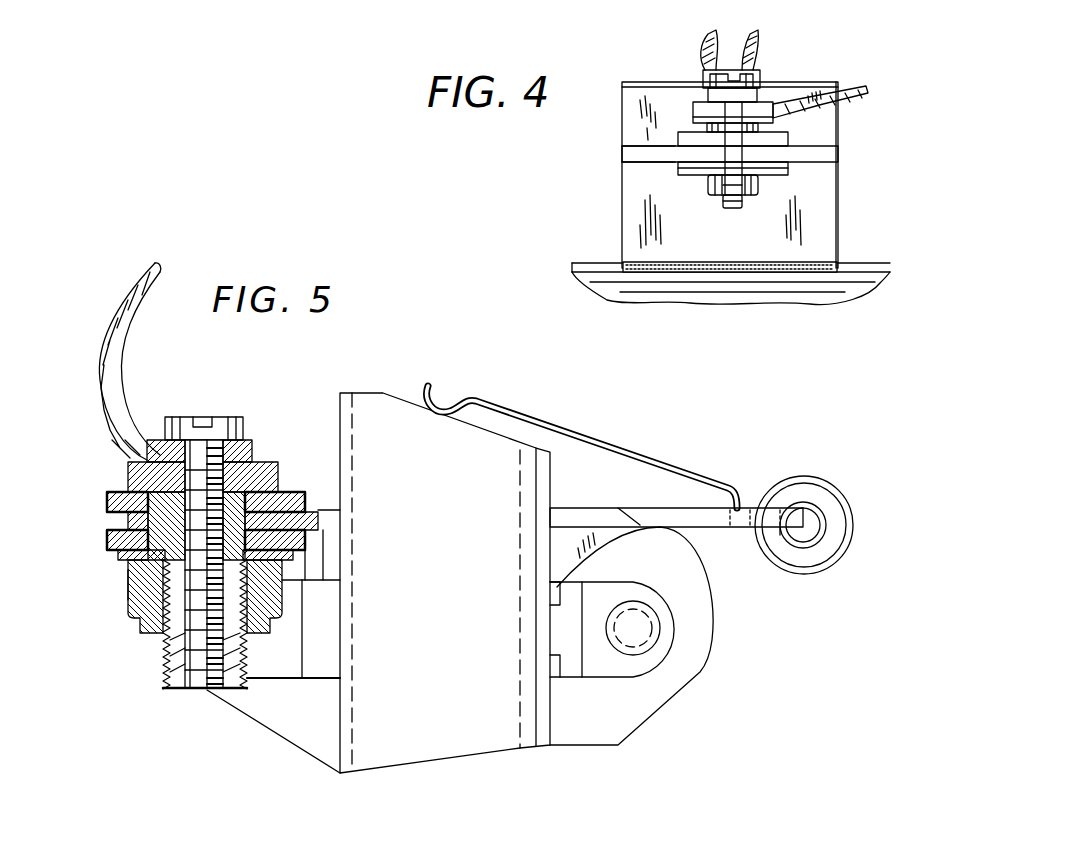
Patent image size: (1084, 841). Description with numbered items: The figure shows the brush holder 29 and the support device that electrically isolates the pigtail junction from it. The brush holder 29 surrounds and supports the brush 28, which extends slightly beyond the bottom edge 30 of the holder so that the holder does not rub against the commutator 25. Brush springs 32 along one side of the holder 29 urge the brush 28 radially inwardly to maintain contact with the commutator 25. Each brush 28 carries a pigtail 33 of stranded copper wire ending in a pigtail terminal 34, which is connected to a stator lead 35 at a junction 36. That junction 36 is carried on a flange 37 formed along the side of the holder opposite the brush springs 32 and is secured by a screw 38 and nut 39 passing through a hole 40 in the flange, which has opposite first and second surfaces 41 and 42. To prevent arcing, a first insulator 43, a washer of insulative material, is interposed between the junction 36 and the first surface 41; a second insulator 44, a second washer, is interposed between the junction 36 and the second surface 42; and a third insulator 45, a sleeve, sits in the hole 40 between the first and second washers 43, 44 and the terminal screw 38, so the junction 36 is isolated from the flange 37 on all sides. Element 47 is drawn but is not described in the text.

In FIG. 4, the commutator 25 is at (580, 278).
In FIG. 4, the brush 28 is at (623, 268).
In FIG. 5, the brush 28 is at (455, 738).
In FIG. 4, the brush holder 29 is at (832, 229).
In FIG. 5, the brush holder 29 is at (545, 458).
In FIG. 4, the bottom edge 30 is at (832, 282).
In FIG. 5, the brush springs 32 is at (805, 470).
In FIG. 4, the pigtail 33 is at (748, 44).
In FIG. 5, the pigtail 33 is at (103, 362).
In FIG. 4, the pigtail terminal 34 is at (760, 72).
In FIG. 5, the pigtail terminal 34 is at (252, 452).
In FIG. 4, the stator lead 35 is at (790, 107).
In FIG. 5, the stator lead 35 is at (130, 478).
In FIG. 4, the junction 36 is at (770, 199).
In FIG. 5, the junction 36 is at (131, 620).
In FIG. 4, the flange 37 is at (660, 158).
In FIG. 5, the flange 37 is at (128, 520).
In FIG. 4, the screw 38 is at (712, 78).
In FIG. 5, the screw 38 is at (203, 672).
In FIG. 4, the nut 39 is at (705, 196).
In FIG. 5, the nut 39 is at (160, 634).
In FIG. 4, the hole 40 is at (807, 165).
In FIG. 4, the first surface 41 is at (648, 142).
In FIG. 4, the second surface 42 is at (641, 166).
In FIG. 4, the first insulator 43 is at (787, 136).
In FIG. 5, the first insulator 43 is at (108, 498).
In FIG. 4, the second insulator 44 is at (777, 167).
In FIG. 5, the second insulator 44 is at (107, 542).
In FIG. 5, the third insulator 45 is at (128, 580).
In FIG. 4, the strap 47 is at (830, 92).